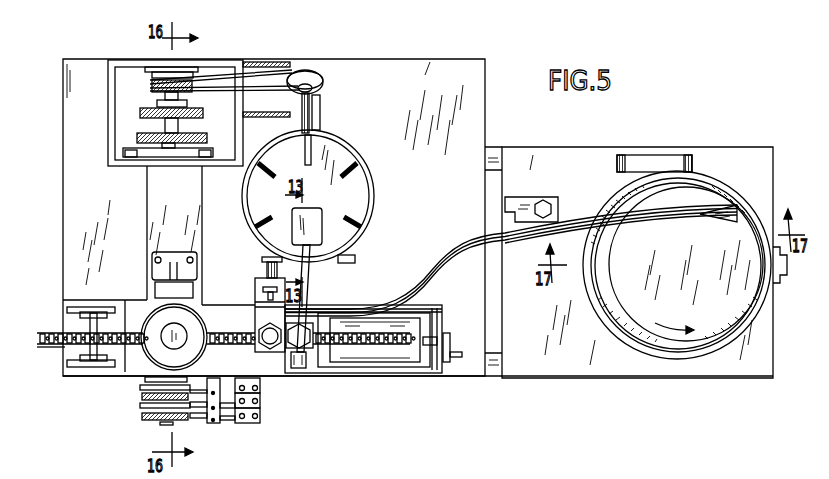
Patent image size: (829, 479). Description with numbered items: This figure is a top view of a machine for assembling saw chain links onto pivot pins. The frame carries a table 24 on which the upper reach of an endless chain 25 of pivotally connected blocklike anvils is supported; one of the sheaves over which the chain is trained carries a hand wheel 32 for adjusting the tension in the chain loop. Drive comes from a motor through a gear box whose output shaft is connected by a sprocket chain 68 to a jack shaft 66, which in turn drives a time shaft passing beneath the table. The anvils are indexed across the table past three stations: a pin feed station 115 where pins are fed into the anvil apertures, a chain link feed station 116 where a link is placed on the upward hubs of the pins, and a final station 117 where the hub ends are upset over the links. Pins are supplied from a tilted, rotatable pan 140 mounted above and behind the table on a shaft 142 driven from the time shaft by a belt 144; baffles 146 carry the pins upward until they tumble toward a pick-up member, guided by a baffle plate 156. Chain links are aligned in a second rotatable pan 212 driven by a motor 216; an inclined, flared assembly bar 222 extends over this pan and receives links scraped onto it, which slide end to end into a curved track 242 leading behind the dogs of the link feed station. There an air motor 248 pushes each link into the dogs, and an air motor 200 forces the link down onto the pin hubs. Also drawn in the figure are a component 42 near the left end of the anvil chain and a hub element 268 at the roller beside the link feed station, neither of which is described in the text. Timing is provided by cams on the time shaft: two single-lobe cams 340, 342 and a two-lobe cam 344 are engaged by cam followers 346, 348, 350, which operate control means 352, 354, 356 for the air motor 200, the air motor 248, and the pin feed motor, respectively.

The table 24 is at (310, 373).
The endless chain 25 is at (52, 348).
The hand wheel 32 is at (447, 341).
The chain 42 is at (44, 329).
The jack shaft 66 is at (180, 127).
The sprocket chain 68 is at (197, 113).
The pin feed station 115 is at (317, 313).
The chain link feed station 116 is at (250, 304).
The riveting station 117 is at (143, 306).
The pan 140 is at (352, 152).
The shaft 142 is at (308, 105).
The belt 144 is at (288, 72).
The baffles 146 is at (276, 180).
The baffle plate 156 is at (308, 223).
The air motor 200 is at (270, 340).
The pan 212 is at (715, 324).
The motor 216 is at (654, 170).
The assembly bar 222 is at (704, 209).
The track 242 is at (446, 252).
The air motor 248 is at (267, 272).
The hub 268 is at (182, 323).
The cam 340 is at (145, 391).
The cam 342 is at (147, 402).
The cam 344 is at (143, 413).
The cam follower 346 is at (240, 405).
The cam follower 348 is at (231, 410).
The cam follower 350 is at (199, 420).
The control means 352 is at (262, 391).
The control means 354 is at (262, 404).
The control means 356 is at (262, 418).